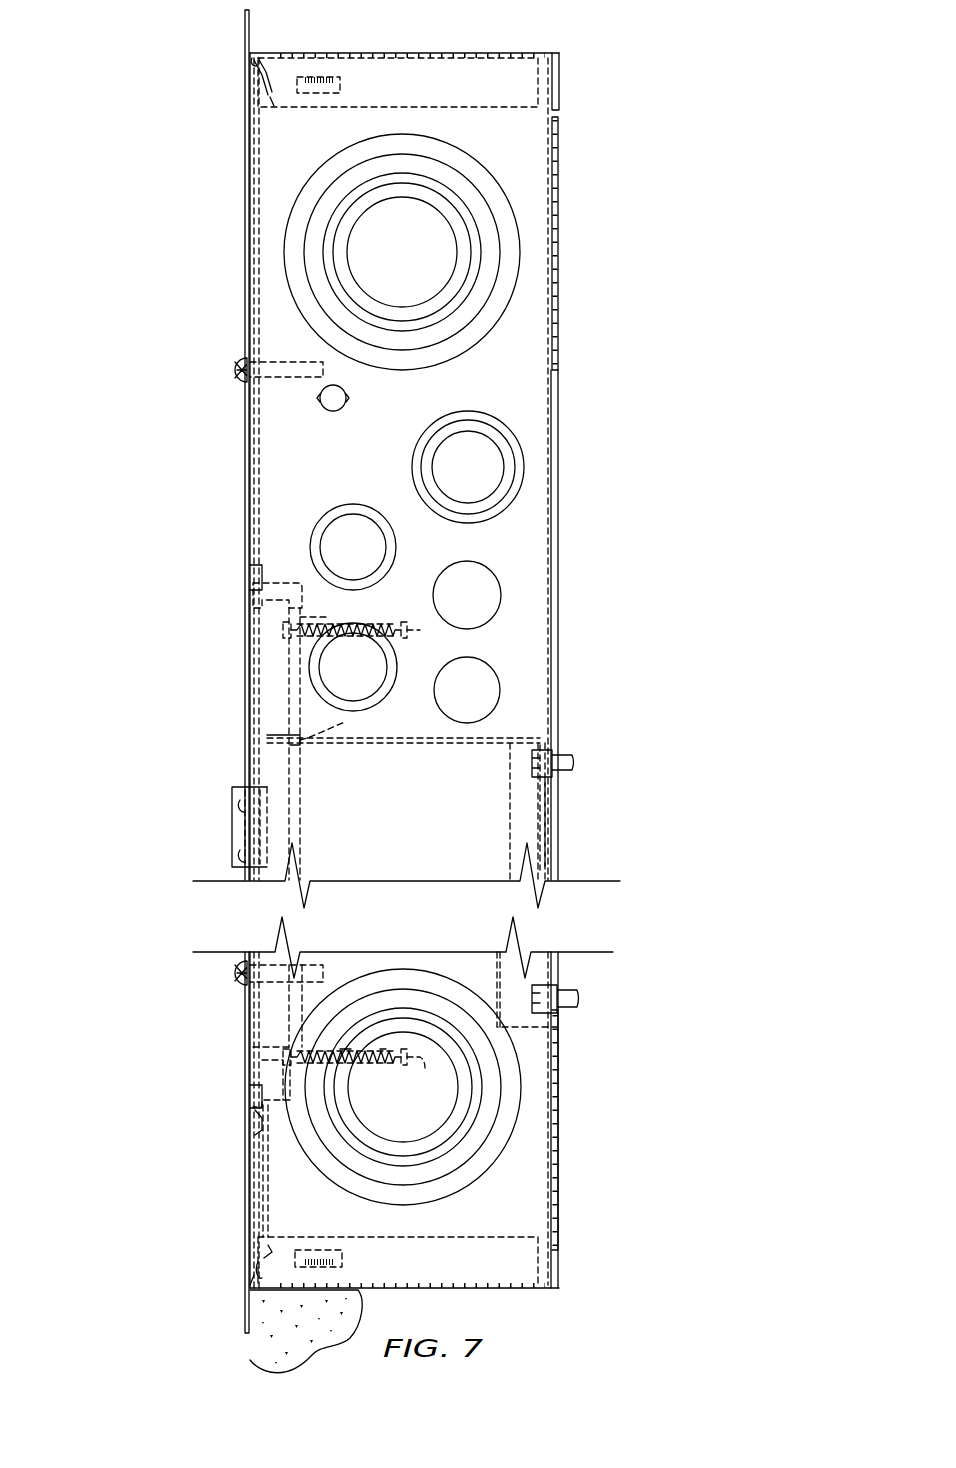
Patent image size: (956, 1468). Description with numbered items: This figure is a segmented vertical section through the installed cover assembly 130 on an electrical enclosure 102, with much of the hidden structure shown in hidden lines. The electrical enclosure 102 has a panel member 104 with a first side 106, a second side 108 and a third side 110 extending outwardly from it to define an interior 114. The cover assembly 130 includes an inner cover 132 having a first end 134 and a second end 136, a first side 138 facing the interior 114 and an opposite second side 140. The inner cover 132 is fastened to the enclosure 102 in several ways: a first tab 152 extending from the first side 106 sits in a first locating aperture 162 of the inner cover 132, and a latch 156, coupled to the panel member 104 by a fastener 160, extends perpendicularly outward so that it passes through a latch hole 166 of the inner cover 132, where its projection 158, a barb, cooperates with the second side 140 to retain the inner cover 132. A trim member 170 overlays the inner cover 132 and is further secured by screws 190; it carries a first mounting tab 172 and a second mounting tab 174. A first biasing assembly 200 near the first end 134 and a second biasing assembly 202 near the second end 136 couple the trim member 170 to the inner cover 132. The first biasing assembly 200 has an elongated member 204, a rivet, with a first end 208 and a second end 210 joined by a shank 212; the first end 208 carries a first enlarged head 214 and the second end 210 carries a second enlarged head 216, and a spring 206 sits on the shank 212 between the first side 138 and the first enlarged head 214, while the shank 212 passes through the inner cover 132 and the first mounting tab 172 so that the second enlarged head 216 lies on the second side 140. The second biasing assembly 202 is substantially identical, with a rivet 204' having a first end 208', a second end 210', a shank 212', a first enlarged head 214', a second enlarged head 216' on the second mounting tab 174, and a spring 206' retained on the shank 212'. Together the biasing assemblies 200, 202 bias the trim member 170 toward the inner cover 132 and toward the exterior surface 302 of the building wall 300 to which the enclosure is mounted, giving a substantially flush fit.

The electrical enclosure 102 is at (579, 1350).
The panel member 104 is at (552, 425).
The first side 106 is at (540, 1290).
The second side 108 is at (510, 53).
The third side 110 is at (530, 1157).
The interior 114 is at (291, 464).
The cover assembly 130 is at (166, 479).
The inner cover 132 is at (289, 795).
The first end 134 is at (248, 1248).
The second end 136 is at (248, 587).
The first side 138 is at (300, 592).
The second side 140 is at (330, 712).
The first tab 152 is at (282, 1250).
The latch 156 is at (427, 745).
The projection 158 is at (290, 733).
The latch hole 166 is at (280, 748).
The fastener 160 is at (553, 757).
The first locating aperture 162 is at (257, 1237).
The trim member 170 is at (245, 33).
The first mounting tab 172 is at (275, 1060).
The second mounting tab 174 is at (253, 606).
The screw 190 is at (240, 368).
The first biasing assembly 200 is at (331, 1014).
The second biasing assembly 202 is at (337, 599).
The elongated member 204 is at (366, 1002).
The rivet 204' is at (334, 606).
The spring 206 is at (337, 976).
The spring 206' is at (436, 644).
The first end 208 is at (443, 999).
The first end 208' is at (470, 565).
The second end 210 is at (297, 1023).
The second end 210' is at (288, 643).
The shank 212 is at (403, 985).
The shank 212' is at (353, 547).
The first enlarged head 214 is at (428, 1076).
The first enlarged head 214' is at (459, 595).
The second enlarged head 216 is at (292, 1040).
The second enlarged head 216' is at (281, 659).
The building wall 300 is at (258, 1350).
The exterior surface 302 is at (248, 1333).